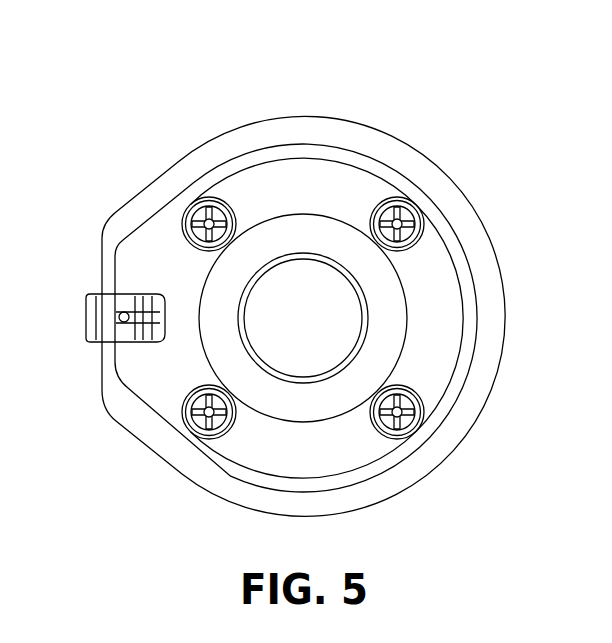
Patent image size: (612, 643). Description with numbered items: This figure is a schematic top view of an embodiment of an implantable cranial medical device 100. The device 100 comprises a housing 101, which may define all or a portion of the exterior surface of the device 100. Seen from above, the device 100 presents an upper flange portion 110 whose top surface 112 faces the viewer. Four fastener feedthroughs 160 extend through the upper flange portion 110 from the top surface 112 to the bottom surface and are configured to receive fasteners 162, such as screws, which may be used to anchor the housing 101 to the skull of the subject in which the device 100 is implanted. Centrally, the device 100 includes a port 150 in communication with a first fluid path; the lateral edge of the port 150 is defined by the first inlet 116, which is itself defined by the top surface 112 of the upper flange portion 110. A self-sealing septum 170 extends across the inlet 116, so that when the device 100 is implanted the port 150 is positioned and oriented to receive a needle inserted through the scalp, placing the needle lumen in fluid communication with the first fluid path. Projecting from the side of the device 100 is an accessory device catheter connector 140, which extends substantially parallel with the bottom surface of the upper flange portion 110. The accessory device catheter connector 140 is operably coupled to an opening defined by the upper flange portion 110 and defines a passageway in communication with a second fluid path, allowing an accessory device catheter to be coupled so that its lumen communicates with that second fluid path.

The implantable medical device 100 is at (152, 93).
The housing 101 is at (437, 163).
The upper flange portion 110 is at (462, 223).
The top surface 112 is at (323, 178).
The first inlet 116 is at (373, 330).
The accessory device catheter connector 140 is at (86, 314).
The port 150 is at (328, 308).
The fastener feedthroughs 160 is at (235, 198).
The fasteners 162 is at (188, 222).
The self-sealing septum 170 is at (262, 323).